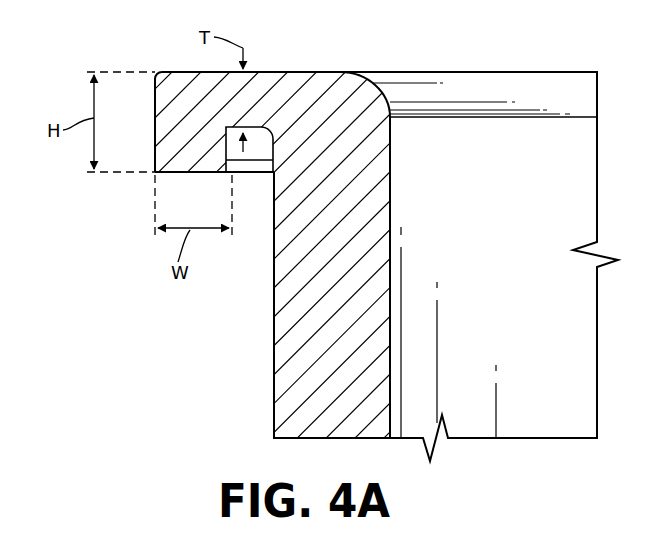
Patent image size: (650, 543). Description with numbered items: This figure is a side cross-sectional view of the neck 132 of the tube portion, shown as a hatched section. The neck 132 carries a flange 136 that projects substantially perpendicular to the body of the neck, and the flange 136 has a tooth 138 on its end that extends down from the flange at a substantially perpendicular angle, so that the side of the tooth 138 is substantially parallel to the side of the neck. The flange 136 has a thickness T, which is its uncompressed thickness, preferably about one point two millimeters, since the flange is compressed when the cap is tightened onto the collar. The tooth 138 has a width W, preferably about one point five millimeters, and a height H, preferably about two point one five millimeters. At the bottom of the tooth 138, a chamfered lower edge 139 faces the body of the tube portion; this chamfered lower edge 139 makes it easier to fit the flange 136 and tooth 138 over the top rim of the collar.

The neck 132 is at (325, 241).
The flange 136 is at (278, 82).
The tooth 138 is at (181, 82).
The chamfered lower edge 139 is at (220, 172).